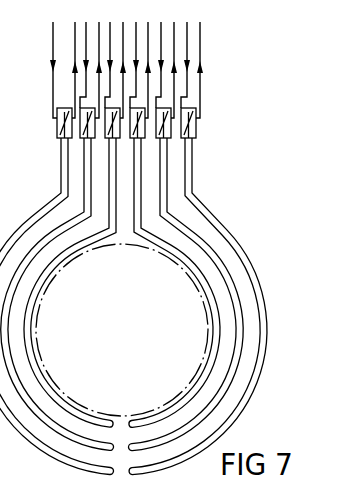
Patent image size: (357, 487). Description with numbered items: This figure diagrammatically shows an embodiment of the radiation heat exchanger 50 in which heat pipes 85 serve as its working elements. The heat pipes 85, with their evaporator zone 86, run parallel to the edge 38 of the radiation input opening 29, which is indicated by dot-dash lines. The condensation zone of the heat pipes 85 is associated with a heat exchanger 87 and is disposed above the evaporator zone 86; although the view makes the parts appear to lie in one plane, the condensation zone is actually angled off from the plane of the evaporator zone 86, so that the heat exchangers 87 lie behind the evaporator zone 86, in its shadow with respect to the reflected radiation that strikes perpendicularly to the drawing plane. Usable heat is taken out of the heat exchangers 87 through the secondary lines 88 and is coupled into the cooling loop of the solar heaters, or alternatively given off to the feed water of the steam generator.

The radiation input opening 29 is at (133, 324).
The edge of the radiation input opening 38 is at (168, 251).
The radiation heat exchanger 50 is at (149, 306).
The heat pipes 85 is at (217, 250).
The evaporator zone 86 is at (266, 333).
The heat exchanger 87 is at (197, 138).
The secondary lines 88 is at (187, 43).